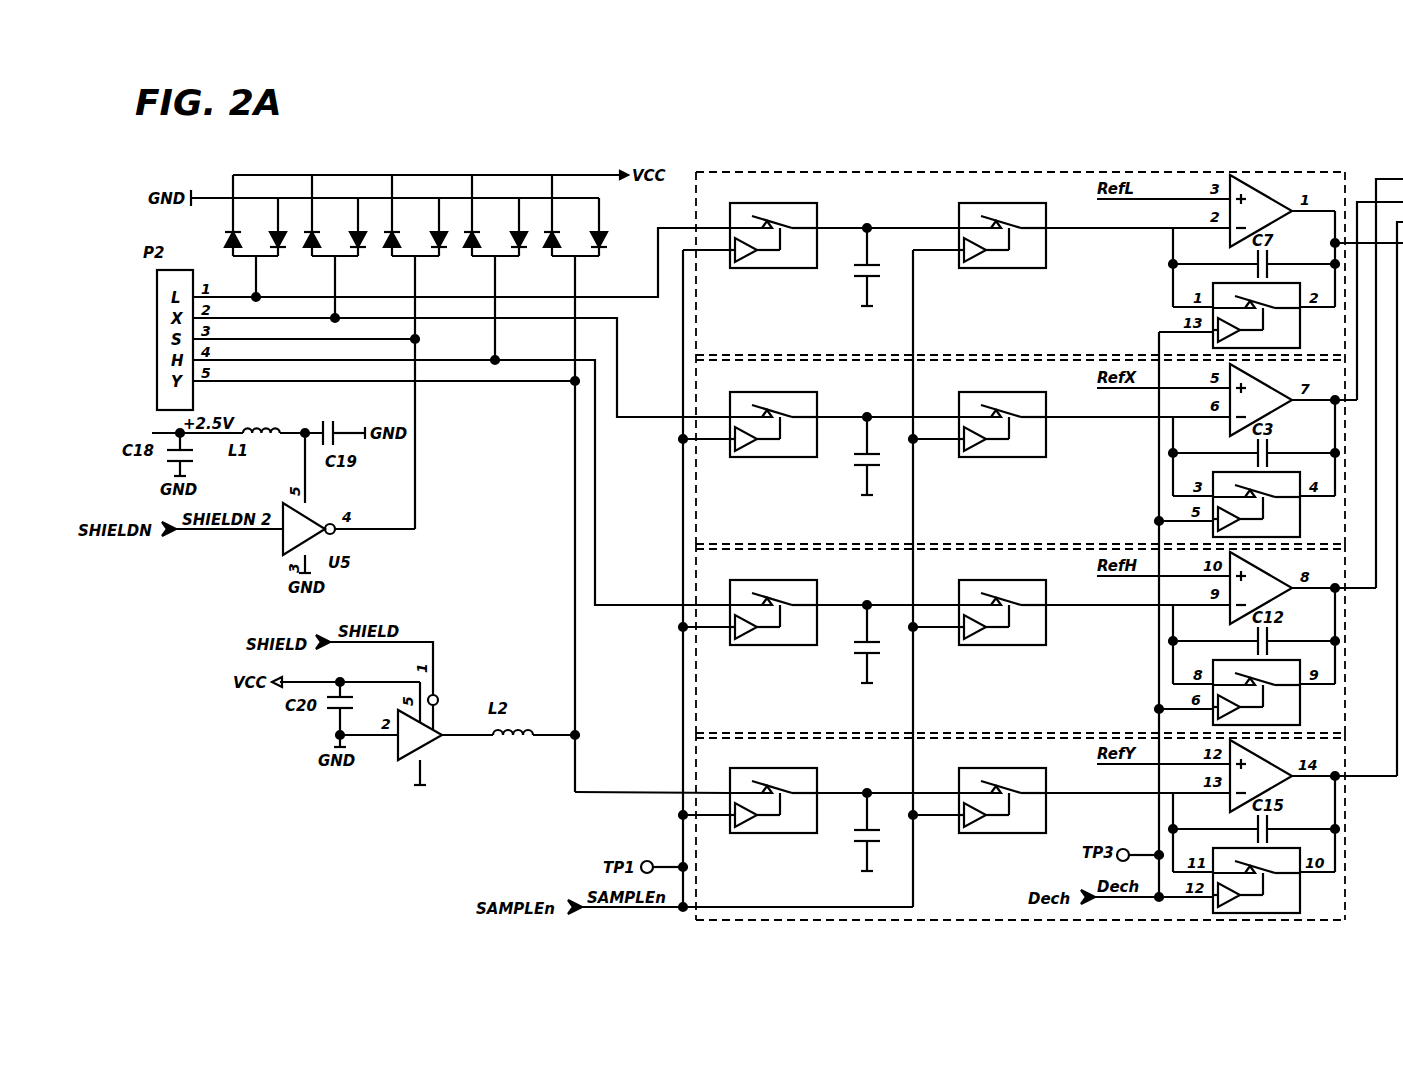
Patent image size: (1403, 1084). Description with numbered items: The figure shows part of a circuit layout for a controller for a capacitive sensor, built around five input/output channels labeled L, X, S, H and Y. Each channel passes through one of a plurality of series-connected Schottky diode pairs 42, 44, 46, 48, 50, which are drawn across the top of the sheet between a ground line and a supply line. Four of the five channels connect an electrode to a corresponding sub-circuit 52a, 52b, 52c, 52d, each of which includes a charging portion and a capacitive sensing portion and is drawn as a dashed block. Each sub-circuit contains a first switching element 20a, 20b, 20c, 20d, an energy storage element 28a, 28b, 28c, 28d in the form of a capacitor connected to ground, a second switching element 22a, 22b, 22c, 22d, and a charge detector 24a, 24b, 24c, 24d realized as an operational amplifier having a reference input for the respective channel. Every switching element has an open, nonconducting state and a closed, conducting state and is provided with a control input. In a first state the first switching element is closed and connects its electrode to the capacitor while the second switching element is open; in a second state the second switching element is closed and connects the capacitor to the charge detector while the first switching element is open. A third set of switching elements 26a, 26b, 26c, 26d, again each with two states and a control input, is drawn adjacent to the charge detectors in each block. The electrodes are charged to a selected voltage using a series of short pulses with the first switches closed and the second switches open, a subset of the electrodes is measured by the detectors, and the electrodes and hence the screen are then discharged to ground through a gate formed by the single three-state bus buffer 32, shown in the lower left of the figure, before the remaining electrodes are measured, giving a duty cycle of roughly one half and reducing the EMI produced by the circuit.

The first switching element 20a is at (772, 203).
The first switching element 20b is at (772, 392).
The first switching element 20c is at (772, 580).
The first switching element 20d is at (772, 768).
The second switching element 22a is at (1002, 203).
The second switching element 22b is at (1002, 392).
The second switching element 22c is at (1002, 580).
The second switching element 22d is at (1002, 768).
The charge detector 24a is at (1262, 191).
The charge detector 24b is at (1262, 380).
The charge detector 24c is at (1262, 568).
The charge detector 24d is at (1262, 756).
The third switching element 26a is at (1278, 283).
The third switching element 26b is at (1278, 472).
The third switching element 26c is at (1278, 660).
The third switching element 26d is at (1278, 848).
The energy storage element 28a is at (857, 280).
The energy storage element 28b is at (857, 469).
The energy storage element 28c is at (857, 657).
The energy storage element 28d is at (857, 845).
The single bus buffer 32 is at (440, 746).
The series-connected Schottky diode pair 42 is at (247, 206).
The series-connected Schottky diode pair 44 is at (327, 206).
The series-connected Schottky diode pair 46 is at (407, 206).
The series-connected Schottky diode pair 48 is at (487, 206).
The series-connected Schottky diode pair 50 is at (567, 206).
The sub-circuit 52a is at (697, 172).
The sub-circuit 52b is at (696, 380).
The sub-circuit 52c is at (696, 568).
The sub-circuit 52d is at (696, 758).